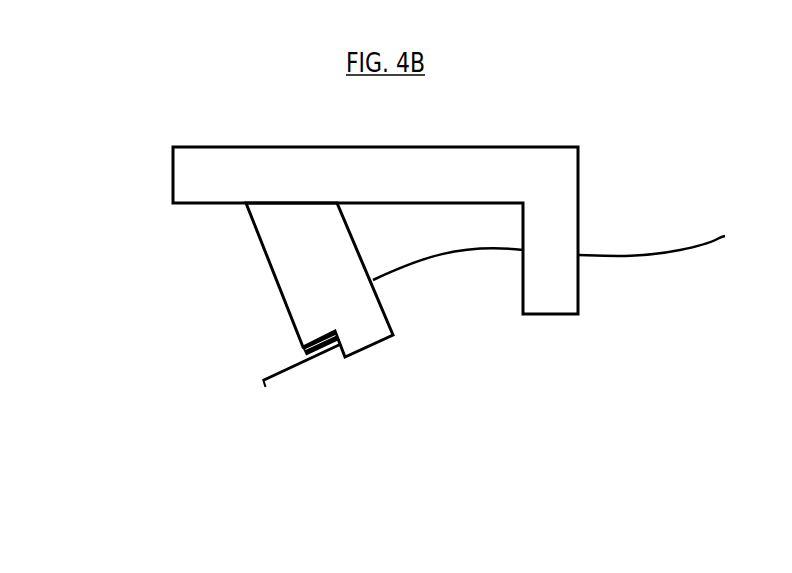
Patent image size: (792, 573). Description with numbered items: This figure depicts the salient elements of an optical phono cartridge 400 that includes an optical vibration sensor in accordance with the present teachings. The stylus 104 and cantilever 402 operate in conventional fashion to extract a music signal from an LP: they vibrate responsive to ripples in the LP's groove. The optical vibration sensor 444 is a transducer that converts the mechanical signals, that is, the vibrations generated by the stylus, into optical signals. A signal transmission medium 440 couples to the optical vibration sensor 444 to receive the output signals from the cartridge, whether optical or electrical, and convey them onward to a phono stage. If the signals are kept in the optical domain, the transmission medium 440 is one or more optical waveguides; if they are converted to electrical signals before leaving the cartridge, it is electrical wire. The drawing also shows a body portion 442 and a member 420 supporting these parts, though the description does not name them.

The optical phono cartridge 400 is at (220, 111).
The mounting bracket 442 is at (390, 184).
The seal body 420 is at (330, 268).
The optical vibration sensor 444 is at (284, 350).
The cantilever 402 is at (282, 375).
The stylus 104 is at (258, 388).
The signal transmission medium 440 is at (437, 302).